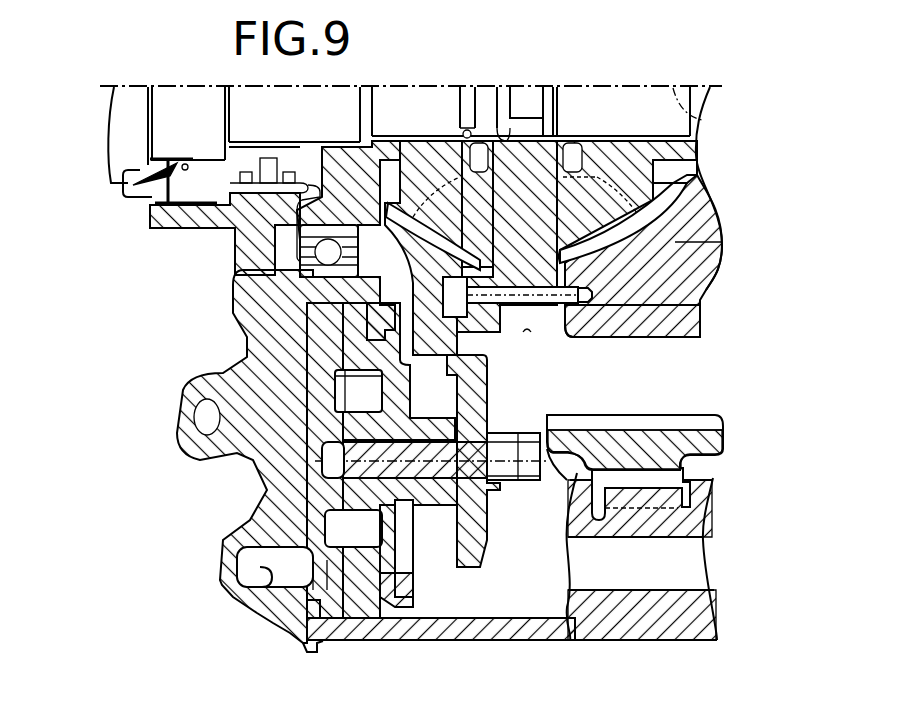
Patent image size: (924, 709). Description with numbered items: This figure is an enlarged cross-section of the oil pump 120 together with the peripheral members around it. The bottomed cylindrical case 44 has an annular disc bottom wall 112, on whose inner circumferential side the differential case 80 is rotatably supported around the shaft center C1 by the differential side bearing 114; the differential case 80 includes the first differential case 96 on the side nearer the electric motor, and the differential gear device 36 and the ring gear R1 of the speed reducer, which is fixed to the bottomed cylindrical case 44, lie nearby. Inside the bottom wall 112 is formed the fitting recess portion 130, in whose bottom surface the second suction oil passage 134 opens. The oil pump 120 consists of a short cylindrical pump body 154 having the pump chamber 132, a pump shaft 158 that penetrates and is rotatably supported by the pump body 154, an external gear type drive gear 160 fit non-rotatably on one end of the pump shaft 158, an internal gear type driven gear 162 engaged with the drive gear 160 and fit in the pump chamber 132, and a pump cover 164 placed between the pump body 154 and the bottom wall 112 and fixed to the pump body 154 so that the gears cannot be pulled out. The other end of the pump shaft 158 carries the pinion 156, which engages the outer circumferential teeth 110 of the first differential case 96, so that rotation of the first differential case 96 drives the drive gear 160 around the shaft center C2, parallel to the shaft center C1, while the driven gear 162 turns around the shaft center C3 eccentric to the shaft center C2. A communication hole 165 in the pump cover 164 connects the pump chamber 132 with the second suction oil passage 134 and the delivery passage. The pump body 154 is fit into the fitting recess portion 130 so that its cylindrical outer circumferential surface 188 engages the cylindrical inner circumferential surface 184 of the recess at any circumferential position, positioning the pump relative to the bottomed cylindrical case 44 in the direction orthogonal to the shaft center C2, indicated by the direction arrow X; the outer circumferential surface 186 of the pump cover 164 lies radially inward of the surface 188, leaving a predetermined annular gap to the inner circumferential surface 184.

The first differential case 96 is at (387, 173).
The differential case 80 is at (412, 130).
The shaft center C1 is at (703, 120).
The differential side bearing 114 is at (327, 252).
The bottomed cylindrical case 44 is at (279, 456).
The bottom wall 112 is at (237, 300).
The fitting recess portion 130 is at (310, 331).
The pump cover 164 is at (320, 373).
The outer circumferential teeth 110 is at (447, 372).
The oil pump 120 is at (373, 487).
The differential gear device 36 is at (672, 345).
The pump shaft 158 is at (423, 450).
The ring gear R1 is at (718, 444).
The shaft center C3 is at (345, 446).
The shaft center C2 is at (353, 490).
The drive gear 160 is at (353, 495).
The driven gear 162 is at (353, 531).
The second suction oil passage 134 is at (238, 565).
The communication hole 165 is at (327, 574).
The pump chamber 132 is at (388, 550).
The pinion 156 is at (478, 512).
The pump body 154 is at (407, 576).
The direction X is at (468, 590).
The cylindrical inner circumferential surface 184 is at (307, 603).
The outer circumferential surface 186 is at (330, 612).
The cylindrical outer circumferential surface 188 is at (377, 625).